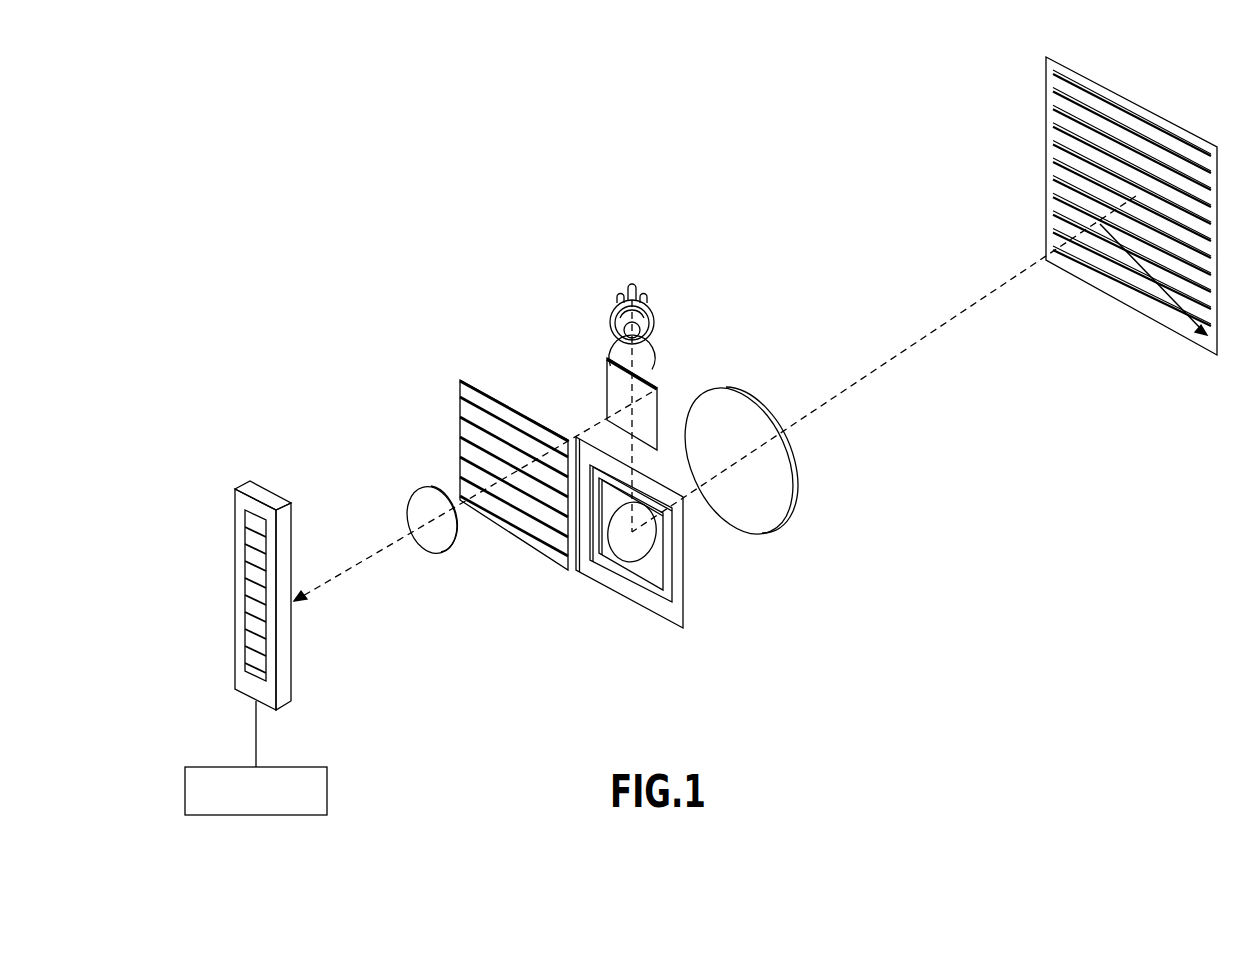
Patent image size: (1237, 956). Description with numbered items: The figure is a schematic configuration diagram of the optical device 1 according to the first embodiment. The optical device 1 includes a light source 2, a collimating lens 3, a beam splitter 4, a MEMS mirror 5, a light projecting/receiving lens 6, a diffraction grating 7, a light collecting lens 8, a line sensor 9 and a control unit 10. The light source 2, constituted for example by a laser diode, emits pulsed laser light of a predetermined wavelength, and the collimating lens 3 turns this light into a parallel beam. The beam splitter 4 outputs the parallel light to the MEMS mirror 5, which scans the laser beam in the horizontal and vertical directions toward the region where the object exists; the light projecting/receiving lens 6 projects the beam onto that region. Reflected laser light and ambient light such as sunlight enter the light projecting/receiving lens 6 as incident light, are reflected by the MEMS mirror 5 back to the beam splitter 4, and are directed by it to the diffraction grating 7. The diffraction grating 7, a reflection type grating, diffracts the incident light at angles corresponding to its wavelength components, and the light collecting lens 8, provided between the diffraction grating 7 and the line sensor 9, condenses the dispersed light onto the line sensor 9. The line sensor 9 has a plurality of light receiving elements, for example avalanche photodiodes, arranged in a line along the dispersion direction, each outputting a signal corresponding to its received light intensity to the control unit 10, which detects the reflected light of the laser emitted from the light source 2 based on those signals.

The optical device 1 is at (701, 436).
The light source 2 is at (650, 324).
The collimating lens 3 is at (652, 358).
The beam splitter 4 is at (606, 378).
The MEMS mirror 5 is at (685, 606).
The light projecting/receiving lens 6 is at (766, 531).
The diffraction grating 7 is at (460, 428).
The light collecting lens 8 is at (418, 488).
The line sensor 9 is at (287, 492).
The control unit 10 is at (293, 764).